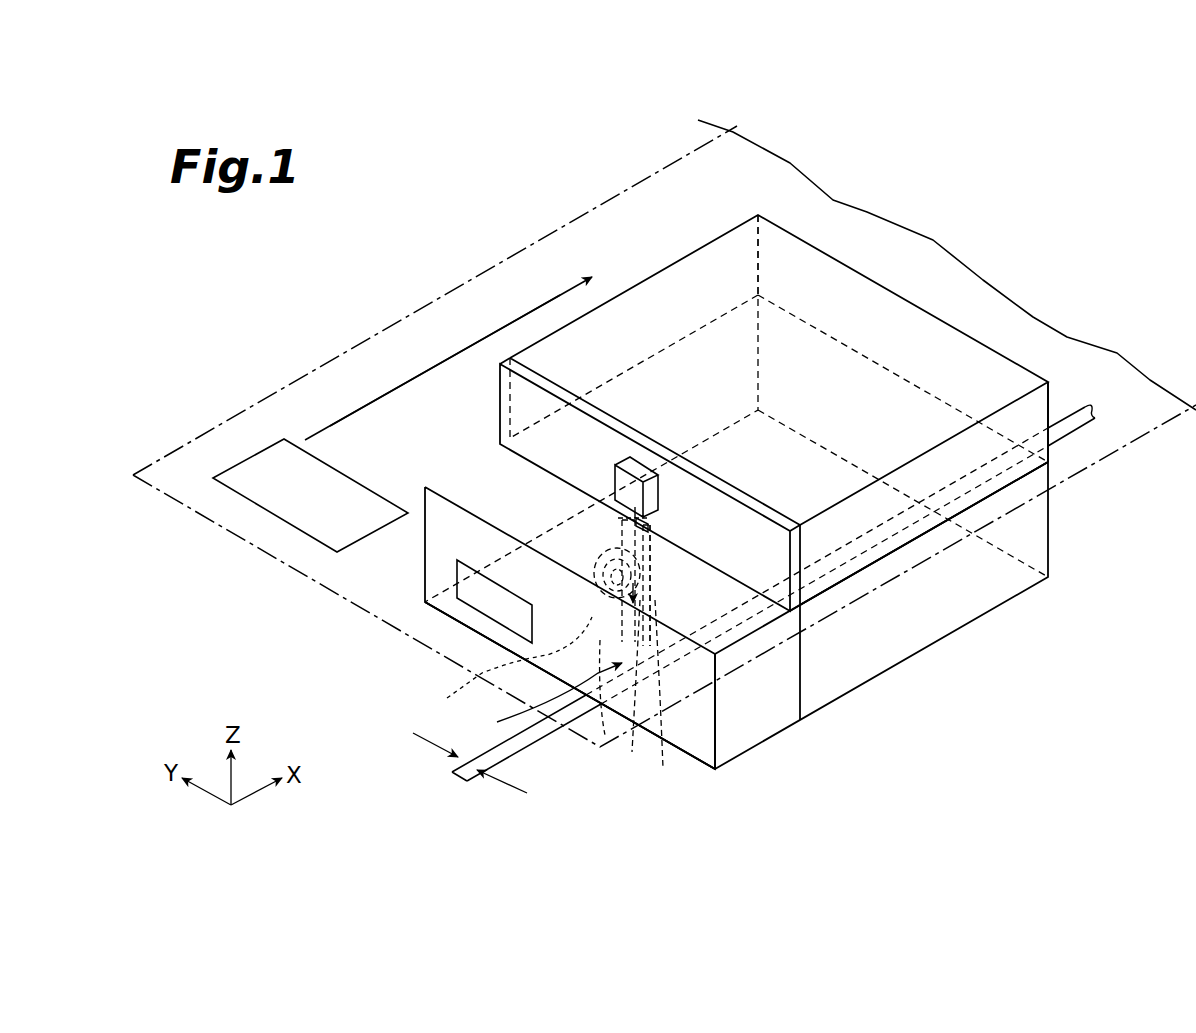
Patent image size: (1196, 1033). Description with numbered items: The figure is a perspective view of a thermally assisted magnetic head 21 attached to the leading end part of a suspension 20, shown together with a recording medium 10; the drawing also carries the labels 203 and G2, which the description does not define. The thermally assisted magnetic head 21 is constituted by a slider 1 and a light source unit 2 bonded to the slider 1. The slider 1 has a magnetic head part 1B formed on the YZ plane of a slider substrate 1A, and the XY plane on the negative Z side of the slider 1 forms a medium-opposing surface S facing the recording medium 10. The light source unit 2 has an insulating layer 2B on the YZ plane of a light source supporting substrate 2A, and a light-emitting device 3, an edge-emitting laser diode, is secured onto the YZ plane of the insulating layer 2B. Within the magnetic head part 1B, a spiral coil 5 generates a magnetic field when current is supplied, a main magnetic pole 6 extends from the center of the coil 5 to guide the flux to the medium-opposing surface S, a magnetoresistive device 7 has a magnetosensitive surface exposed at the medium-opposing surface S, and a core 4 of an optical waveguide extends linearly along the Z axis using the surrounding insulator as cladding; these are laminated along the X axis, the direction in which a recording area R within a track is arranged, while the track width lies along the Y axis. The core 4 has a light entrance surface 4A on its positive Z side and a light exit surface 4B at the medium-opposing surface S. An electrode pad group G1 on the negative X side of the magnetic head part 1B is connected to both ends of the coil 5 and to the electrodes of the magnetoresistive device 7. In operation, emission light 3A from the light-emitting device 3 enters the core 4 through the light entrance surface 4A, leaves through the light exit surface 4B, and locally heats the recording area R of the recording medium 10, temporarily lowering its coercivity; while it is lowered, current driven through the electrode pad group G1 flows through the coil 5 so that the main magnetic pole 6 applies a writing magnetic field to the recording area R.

The slider 1 is at (933, 730).
The slider substrate 1A is at (885, 677).
The magnetic head part 1B is at (782, 733).
The light source unit 2 is at (855, 388).
The light source supporting substrate 2A is at (864, 463).
The insulating layer 2B is at (768, 514).
The light-emitting device 3 is at (612, 472).
The emission light 3A is at (650, 521).
The core 4 is at (615, 540).
The light entrance surface 4A is at (618, 519).
The light exit surface 4B is at (657, 702).
The spiral coil 5 is at (510, 669).
The main magnetic pole 6 is at (550, 702).
The magnetoresistive device 7 is at (668, 624).
The recording medium 10 is at (452, 770).
The suspension 20 is at (383, 333).
The thermally assisted magnetic head 21 is at (847, 228).
The medium moving direction 203 is at (393, 391).
The electrode pad group G1 is at (480, 617).
The second region G2 is at (339, 556).
The recording area R is at (621, 710).
The medium-opposing surface S is at (708, 770).